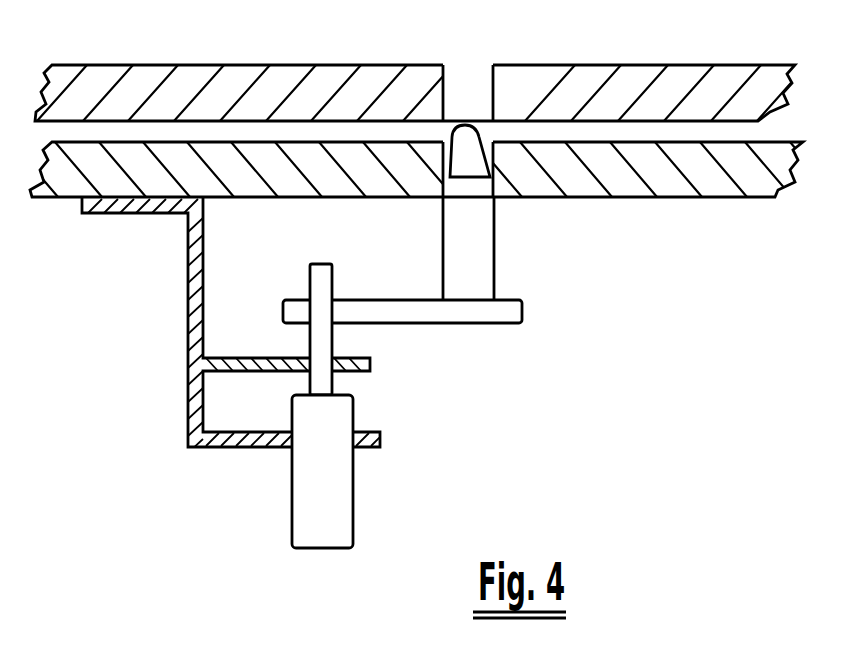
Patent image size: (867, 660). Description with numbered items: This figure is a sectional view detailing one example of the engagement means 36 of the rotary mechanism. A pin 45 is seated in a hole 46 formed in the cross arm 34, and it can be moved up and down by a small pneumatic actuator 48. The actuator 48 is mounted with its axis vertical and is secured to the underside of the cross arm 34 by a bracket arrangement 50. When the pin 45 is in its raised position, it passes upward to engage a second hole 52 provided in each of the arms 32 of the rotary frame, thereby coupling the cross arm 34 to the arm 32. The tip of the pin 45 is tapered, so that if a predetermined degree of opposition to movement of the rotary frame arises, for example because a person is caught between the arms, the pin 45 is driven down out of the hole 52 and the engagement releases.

The arm 32 is at (242, 65).
The cross arm 34 is at (635, 192).
The engagement means 36 is at (541, 348).
The pin 45 is at (483, 250).
The hole 46 is at (444, 190).
The pneumatic actuator 48 is at (338, 485).
The bracket arrangement 50 is at (188, 290).
The second hole 52 is at (443, 78).